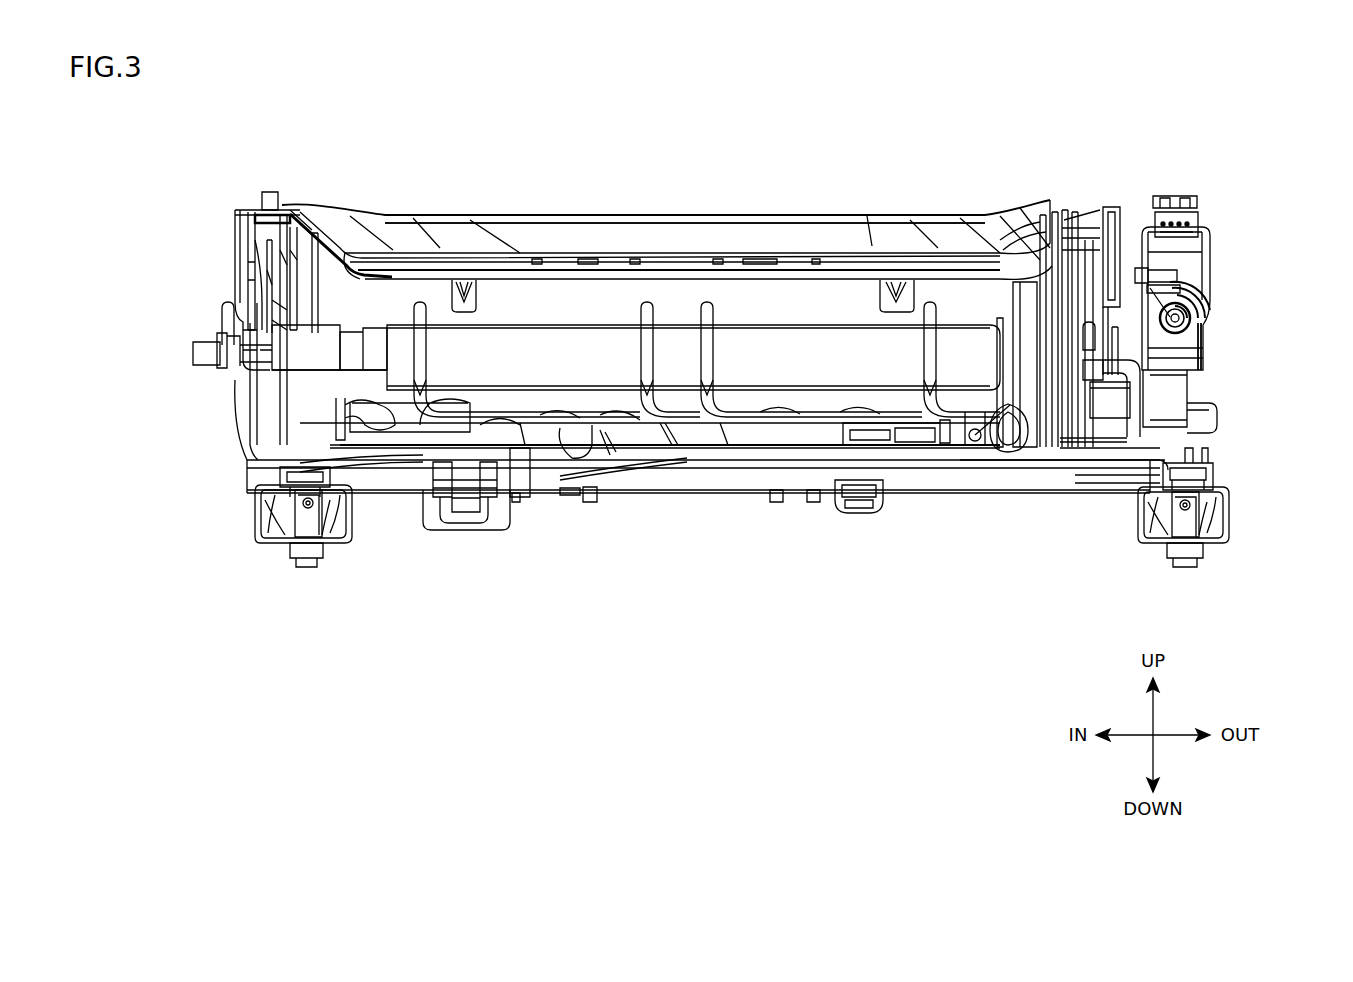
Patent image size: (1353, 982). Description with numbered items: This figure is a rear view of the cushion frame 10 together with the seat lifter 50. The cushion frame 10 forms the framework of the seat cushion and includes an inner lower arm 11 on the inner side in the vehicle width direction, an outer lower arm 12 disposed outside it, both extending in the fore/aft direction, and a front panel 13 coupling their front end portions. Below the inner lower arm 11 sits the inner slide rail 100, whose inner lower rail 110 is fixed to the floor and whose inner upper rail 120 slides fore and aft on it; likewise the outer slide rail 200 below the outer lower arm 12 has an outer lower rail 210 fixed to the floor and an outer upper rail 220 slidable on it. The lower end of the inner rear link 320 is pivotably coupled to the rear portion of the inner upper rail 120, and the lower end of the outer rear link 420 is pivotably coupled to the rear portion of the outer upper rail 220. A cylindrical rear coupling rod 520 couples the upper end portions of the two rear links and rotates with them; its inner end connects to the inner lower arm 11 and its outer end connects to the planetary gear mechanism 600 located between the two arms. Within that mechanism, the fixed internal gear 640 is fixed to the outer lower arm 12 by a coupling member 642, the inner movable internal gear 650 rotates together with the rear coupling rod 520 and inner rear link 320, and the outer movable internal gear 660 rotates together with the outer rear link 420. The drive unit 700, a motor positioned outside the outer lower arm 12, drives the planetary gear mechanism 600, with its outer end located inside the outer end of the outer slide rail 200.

The cushion frame 10 is at (560, 212).
The inner lower arm 11 is at (238, 226).
The outer lower arm 12 is at (1110, 263).
The front panel 13 is at (716, 233).
The seat lifter 50 is at (1246, 397).
The inner slide rail 100 is at (248, 516).
The inner lower rail 110 is at (193, 468).
The inner upper rail 120 is at (282, 472).
The outer slide rail 200 is at (1237, 507).
The outer lower rail 210 is at (1213, 527).
The outer upper rail 220 is at (1213, 484).
The inner rear link 320 is at (315, 330).
The outer rear link 420 is at (1070, 278).
The rear coupling rod 520 is at (805, 345).
The planetary gear mechanism 600 is at (1025, 292).
The fixed internal gear 640 is at (1052, 255).
The coupling member 642 is at (1112, 430).
The inner movable internal gear 650 is at (1040, 268).
The outer movable internal gear 660 is at (1077, 290).
The drive unit 700 is at (1210, 218).